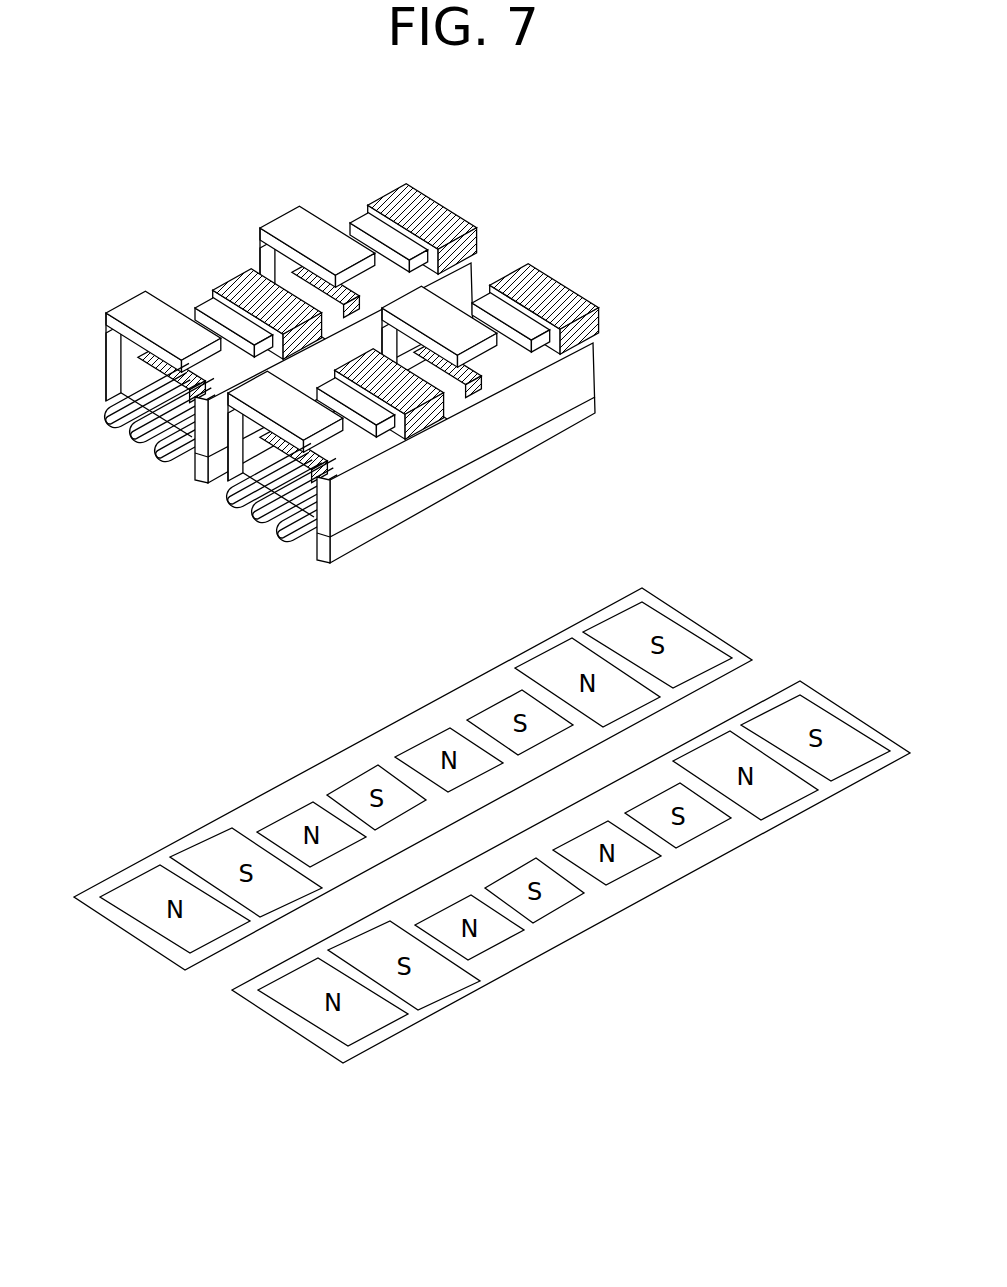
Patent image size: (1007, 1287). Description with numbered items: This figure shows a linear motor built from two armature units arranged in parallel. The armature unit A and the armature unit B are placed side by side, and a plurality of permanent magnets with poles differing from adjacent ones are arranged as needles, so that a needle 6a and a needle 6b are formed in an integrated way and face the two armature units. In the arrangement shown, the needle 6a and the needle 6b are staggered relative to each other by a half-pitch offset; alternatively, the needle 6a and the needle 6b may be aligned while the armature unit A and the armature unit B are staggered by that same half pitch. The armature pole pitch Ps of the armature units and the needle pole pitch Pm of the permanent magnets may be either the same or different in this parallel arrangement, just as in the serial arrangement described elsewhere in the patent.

The armature unit A is at (444, 207).
The armature unit B is at (578, 292).
The needle 6a is at (688, 612).
The needle 6b is at (835, 695).
The armature pole pitch Ps is at (228, 276).
The needle pole pitch Pm is at (200, 840).